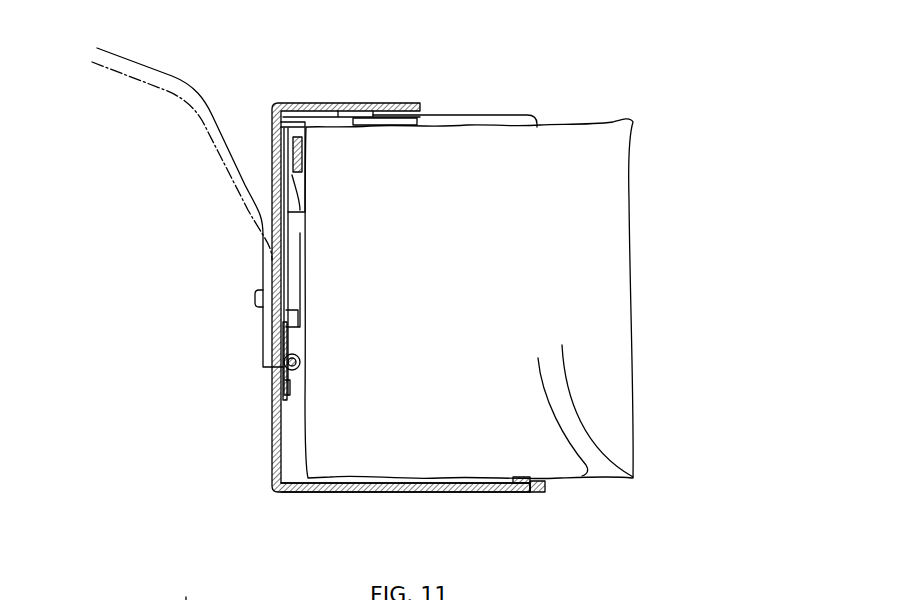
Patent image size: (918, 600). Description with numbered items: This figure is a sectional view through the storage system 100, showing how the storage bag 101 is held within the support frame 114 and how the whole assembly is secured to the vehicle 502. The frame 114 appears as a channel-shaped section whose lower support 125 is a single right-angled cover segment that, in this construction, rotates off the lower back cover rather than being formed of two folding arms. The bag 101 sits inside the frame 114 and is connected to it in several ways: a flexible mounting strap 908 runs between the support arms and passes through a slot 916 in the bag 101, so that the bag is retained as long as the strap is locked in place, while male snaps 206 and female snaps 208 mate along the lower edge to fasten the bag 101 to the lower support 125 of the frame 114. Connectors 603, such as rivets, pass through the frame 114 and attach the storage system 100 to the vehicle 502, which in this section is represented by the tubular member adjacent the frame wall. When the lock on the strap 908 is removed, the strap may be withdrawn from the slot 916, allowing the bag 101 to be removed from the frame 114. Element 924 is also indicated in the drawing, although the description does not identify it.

The storage system 100 is at (470, 123).
The storage bag 101 is at (628, 285).
The support frame 114 is at (275, 462).
The lower support 125 is at (497, 491).
The male snaps 206 is at (538, 488).
The female snaps 208 is at (530, 478).
The vehicle 502 is at (205, 145).
The connectors 603 is at (257, 303).
The mounting strap 908 is at (272, 122).
The slot 916 is at (275, 160).
The support 924 is at (186, 599).